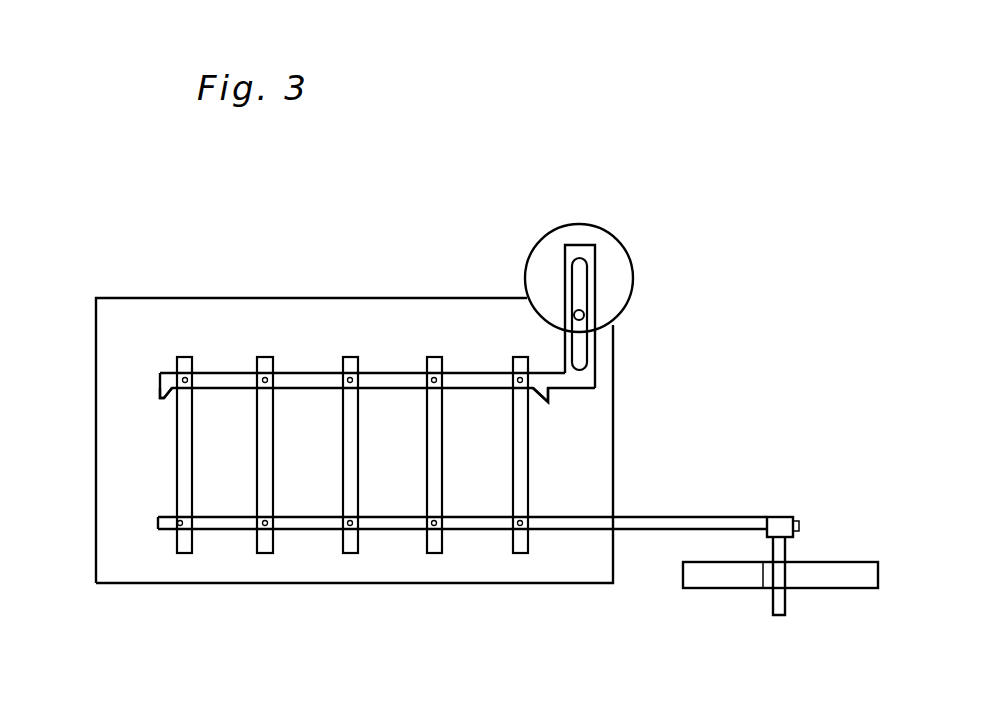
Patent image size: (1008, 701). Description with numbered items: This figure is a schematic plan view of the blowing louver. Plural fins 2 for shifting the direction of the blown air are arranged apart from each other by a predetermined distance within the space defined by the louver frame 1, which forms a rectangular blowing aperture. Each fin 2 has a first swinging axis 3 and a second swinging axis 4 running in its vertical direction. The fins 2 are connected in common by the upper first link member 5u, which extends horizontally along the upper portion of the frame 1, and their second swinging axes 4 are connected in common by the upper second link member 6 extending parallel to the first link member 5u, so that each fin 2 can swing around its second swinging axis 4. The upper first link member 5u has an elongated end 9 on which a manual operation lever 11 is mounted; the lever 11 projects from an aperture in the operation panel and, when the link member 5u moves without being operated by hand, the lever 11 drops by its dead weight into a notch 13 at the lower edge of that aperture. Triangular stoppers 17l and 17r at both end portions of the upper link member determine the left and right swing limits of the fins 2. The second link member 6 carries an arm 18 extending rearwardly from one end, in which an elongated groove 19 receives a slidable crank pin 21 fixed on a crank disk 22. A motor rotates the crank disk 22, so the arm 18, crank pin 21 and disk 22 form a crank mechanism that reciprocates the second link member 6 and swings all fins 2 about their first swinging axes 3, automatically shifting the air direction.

The louver frame 1 is at (96, 338).
The fin 2 is at (177, 475).
The first swinging axis 3 is at (180, 527).
The second swinging axis 4 is at (188, 376).
The upper first link member 5u is at (318, 529).
The upper second link member 6 is at (322, 373).
The elongated end 9 is at (725, 519).
The manual operation lever 11 is at (785, 603).
The notch 13 is at (790, 575).
The left triangular stopper 17l is at (165, 392).
The right triangular stopper 17r is at (548, 398).
The arm 18 is at (595, 282).
The elongated groove 19 is at (580, 258).
The crank pin 21 is at (584, 316).
The crank disk 22 is at (540, 237).